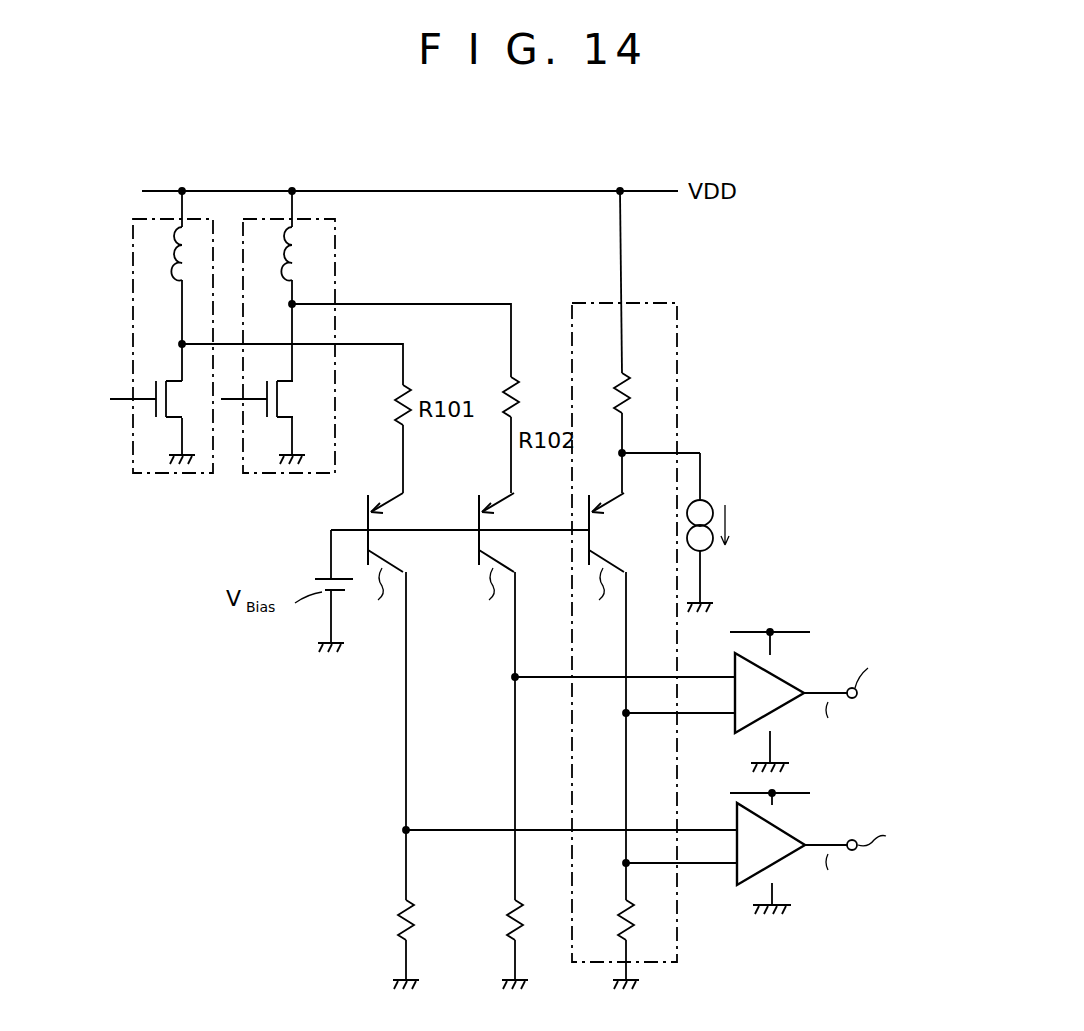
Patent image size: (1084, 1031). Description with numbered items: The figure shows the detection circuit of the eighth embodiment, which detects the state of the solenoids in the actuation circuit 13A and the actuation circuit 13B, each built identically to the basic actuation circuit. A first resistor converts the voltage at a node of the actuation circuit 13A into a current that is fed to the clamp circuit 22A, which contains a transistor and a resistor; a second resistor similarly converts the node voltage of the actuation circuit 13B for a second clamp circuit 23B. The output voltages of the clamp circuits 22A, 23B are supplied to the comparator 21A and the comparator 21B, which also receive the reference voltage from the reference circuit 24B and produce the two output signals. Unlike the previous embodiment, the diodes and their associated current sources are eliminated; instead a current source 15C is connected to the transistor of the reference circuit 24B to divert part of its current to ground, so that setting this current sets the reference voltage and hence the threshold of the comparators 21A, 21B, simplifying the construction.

The actuation circuit 13A is at (133, 272).
The actuation circuit 13B is at (336, 300).
The reference circuit 24B is at (677, 406).
The current source 15C is at (708, 500).
The comparator 21A is at (793, 832).
The comparator 21B is at (797, 684).
The clamp circuit 22A is at (376, 711).
The second current detection circuit 23B is at (491, 711).